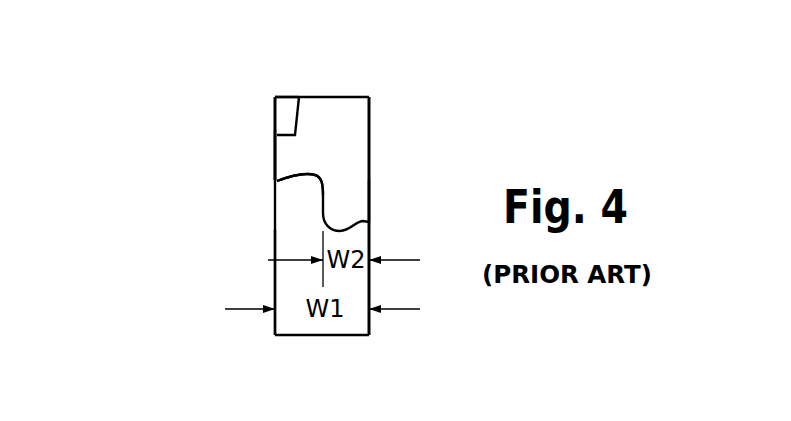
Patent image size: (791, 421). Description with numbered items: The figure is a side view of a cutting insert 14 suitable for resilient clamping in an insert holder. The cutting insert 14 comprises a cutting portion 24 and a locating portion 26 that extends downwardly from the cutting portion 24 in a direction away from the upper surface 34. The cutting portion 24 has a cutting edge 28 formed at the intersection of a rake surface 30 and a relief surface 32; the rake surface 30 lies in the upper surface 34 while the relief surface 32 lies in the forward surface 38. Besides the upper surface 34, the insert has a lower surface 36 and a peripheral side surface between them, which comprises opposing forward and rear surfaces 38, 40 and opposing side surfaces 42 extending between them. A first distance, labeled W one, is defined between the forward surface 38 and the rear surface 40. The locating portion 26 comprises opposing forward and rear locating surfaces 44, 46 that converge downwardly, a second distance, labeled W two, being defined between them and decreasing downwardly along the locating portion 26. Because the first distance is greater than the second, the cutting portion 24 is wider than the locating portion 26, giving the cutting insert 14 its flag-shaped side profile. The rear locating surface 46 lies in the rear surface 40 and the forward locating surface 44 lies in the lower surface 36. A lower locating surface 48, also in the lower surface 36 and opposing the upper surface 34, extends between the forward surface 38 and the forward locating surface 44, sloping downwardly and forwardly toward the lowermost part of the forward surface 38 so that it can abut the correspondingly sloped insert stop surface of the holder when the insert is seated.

The cutting insert 14 is at (197, 63).
The cutting portion 24 is at (180, 133).
The locating portion 26 is at (173, 232).
The cutting edge 28 is at (274, 97).
The rake surface 30 is at (290, 97).
The relief surface 32 is at (274, 115).
The upper surface 34 is at (349, 86).
The lower surface 36 is at (302, 190).
The forward surface 38 is at (268, 142).
The rear surface 40 is at (372, 112).
The side surface 42 is at (342, 137).
The forward locating surface 44 is at (327, 228).
The rear locating surface 46 is at (369, 203).
The lower locating surface 48 is at (277, 182).